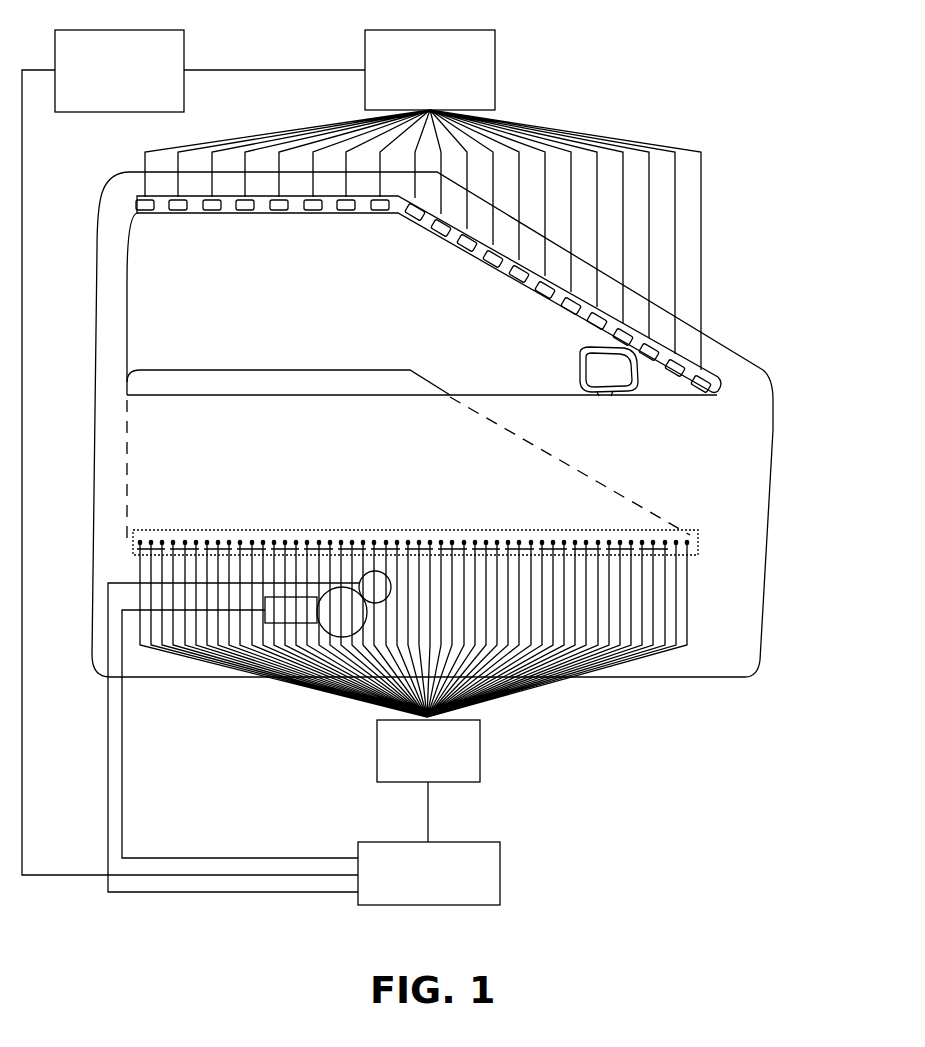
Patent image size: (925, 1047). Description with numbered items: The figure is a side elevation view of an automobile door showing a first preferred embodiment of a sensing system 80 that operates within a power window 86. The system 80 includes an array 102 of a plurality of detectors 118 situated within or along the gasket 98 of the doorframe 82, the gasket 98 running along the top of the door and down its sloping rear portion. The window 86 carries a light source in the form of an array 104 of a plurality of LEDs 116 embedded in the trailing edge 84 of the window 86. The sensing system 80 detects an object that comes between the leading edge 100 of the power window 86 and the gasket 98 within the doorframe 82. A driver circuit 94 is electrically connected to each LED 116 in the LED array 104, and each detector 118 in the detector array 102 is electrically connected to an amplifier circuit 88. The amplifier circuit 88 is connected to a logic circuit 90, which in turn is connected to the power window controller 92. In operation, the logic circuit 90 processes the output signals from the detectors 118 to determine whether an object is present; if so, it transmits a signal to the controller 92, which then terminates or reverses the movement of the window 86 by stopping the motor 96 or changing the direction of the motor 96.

The sensing system 80 is at (750, 66).
The doorframe 82 is at (746, 474).
The trailing edge 84 is at (696, 561).
The window 86 is at (145, 467).
The amplifier circuit 88 is at (488, 39).
The logic circuit 90 is at (169, 44).
The power window controller 92 is at (485, 851).
The driver circuit 94 is at (469, 743).
The motor 96 is at (341, 597).
The gasket 98 is at (368, 218).
The leading edge 100 is at (198, 360).
The array of detectors 102 is at (189, 210).
The array of LEDs 104 is at (557, 529).
The LED 116 is at (689, 535).
The detector 118 is at (704, 377).